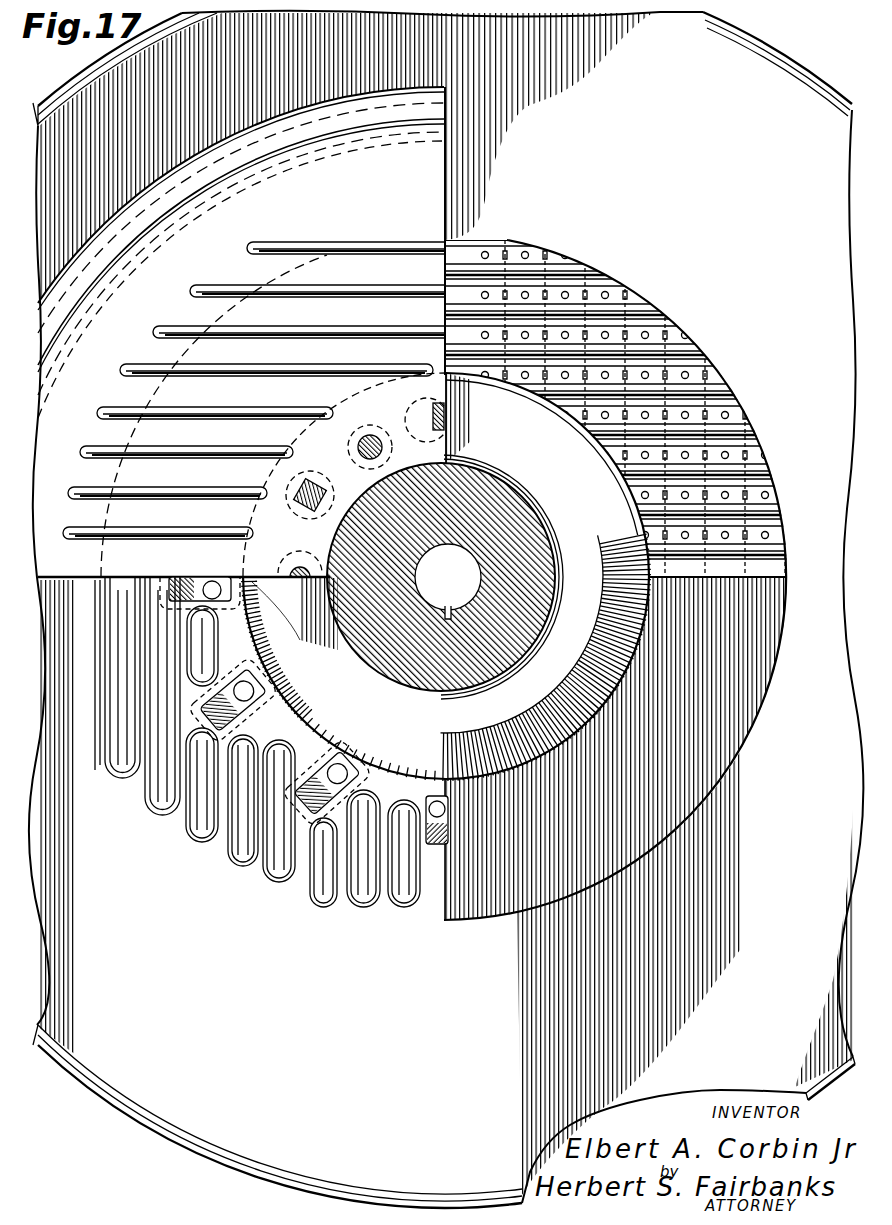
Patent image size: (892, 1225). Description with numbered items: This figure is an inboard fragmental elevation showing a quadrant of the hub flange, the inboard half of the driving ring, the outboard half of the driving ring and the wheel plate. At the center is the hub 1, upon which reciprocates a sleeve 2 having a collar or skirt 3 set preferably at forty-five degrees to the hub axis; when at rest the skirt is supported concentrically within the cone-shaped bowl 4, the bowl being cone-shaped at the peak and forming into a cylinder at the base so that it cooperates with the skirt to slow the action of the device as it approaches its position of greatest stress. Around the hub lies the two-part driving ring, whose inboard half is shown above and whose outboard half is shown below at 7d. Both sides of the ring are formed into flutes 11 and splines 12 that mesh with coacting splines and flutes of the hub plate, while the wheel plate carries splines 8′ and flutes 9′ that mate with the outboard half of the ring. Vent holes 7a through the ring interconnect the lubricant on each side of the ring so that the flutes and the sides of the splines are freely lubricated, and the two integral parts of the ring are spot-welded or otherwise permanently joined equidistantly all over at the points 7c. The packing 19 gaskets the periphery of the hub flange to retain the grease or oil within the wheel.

The hub 1 is at (510, 525).
The sleeve 2 is at (446, 576).
The collar or skirt 3 is at (508, 758).
The cone-shaped bowl 4 is at (285, 716).
The vent holes for lubricant 7a is at (647, 375).
The joining points 7c is at (538, 300).
The outboard half of the driving ring 7d is at (783, 630).
The splines 8′ is at (410, 872).
The flutes 9′ is at (264, 870).
The flutes 11 is at (690, 330).
The splines 12 is at (738, 400).
The packing 19 is at (445, 101).